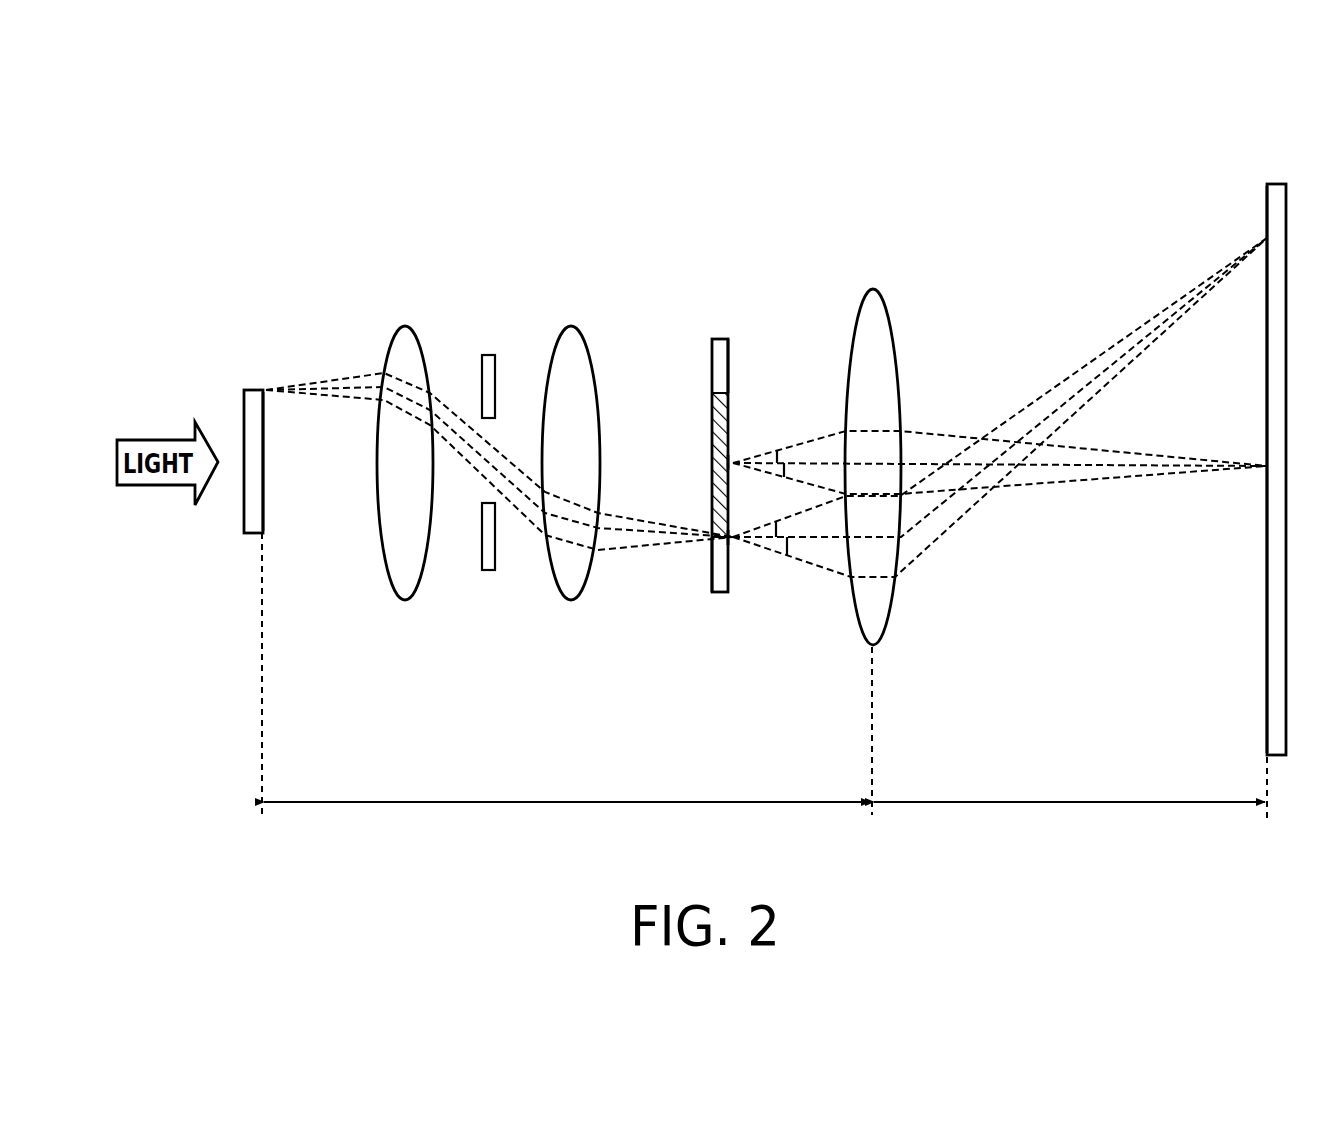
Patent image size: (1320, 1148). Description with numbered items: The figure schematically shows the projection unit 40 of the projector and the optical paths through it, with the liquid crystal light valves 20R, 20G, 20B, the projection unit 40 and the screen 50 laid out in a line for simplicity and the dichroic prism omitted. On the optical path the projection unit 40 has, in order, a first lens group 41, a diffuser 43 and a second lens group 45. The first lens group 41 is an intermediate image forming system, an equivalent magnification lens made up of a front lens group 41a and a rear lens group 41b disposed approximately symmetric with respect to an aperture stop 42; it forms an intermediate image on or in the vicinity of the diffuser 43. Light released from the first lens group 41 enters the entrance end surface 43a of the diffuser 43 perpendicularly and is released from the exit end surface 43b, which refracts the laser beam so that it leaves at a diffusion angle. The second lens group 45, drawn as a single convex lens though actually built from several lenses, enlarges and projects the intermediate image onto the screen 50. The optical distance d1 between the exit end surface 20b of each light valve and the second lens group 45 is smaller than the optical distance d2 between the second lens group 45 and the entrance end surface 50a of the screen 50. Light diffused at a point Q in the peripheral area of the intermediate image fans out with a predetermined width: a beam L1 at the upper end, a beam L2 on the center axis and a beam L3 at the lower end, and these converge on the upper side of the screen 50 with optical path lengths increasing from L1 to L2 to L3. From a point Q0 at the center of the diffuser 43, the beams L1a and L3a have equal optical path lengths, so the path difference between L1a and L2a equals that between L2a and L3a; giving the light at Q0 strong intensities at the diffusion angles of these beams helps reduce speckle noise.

The liquid crystal light valve 20R is at (241, 415).
The liquid crystal light valve 20G is at (241, 415).
The liquid crystal light valve 20B is at (253, 393).
The exit end surface 20b is at (265, 505).
The projection unit 40 is at (567, 435).
The first lens group 41 is at (488, 549).
The front lens group 41a is at (406, 600).
The rear lens group 41b is at (571, 515).
The aperture stop 42 is at (489, 355).
The diffuser 43 is at (720, 592).
The entrance end surface 43a is at (712, 561).
The exit end surface 43b is at (729, 355).
The second lens group 45 is at (882, 596).
The screen 50 is at (1279, 190).
The entrance end surface 50a is at (1267, 213).
The point Q0 is at (732, 462).
The point Q is at (733, 540).
The beam L1 is at (1031, 403).
The beam L2 is at (1115, 361).
The beam L3 is at (1190, 309).
The beam L1a is at (1111, 451).
The beam L2a is at (1140, 467).
The beam L3a is at (1054, 482).
The optical distance d1 is at (567, 682).
The optical distance d2 is at (1070, 794).